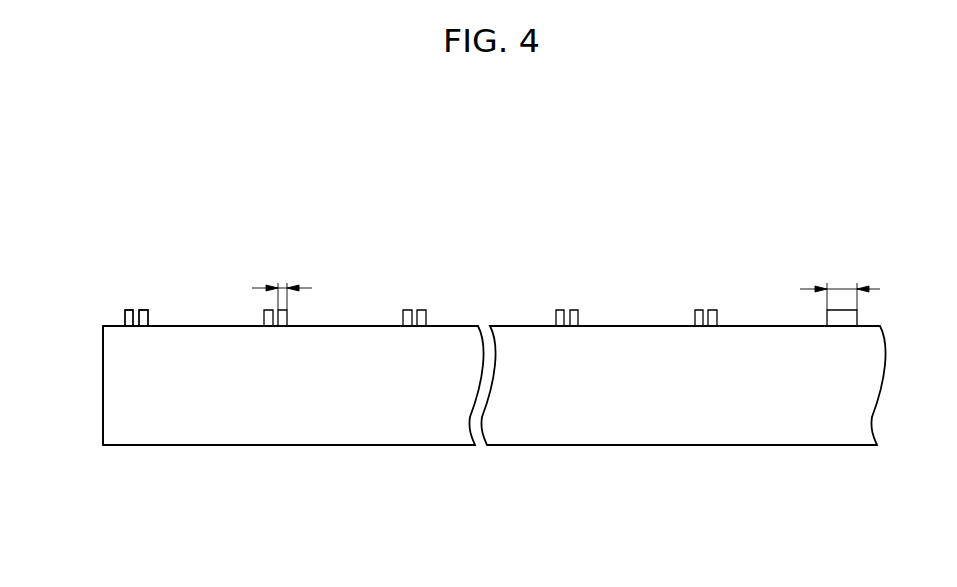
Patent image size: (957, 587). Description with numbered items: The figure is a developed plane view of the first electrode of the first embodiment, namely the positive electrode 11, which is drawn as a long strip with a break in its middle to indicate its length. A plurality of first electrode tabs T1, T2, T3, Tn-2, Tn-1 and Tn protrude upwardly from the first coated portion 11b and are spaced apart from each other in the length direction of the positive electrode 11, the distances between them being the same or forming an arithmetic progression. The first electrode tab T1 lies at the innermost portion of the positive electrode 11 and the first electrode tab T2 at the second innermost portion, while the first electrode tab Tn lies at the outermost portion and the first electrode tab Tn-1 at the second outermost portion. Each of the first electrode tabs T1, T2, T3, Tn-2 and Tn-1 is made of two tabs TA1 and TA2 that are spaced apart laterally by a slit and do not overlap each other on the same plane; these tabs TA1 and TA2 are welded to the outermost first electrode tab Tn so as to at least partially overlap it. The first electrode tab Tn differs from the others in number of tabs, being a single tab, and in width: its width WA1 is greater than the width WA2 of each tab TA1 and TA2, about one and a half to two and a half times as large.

The positive electrode 11 is at (419, 463).
The first coated portion 11b is at (113, 407).
The first electrode tab T1 is at (116, 312).
The first electrode tab T2 is at (293, 313).
The first electrode tab T3 is at (408, 305).
The first electrode tab Tn-2 is at (565, 305).
The first electrode tab Tn-1 is at (704, 306).
The first electrode tab Tn is at (862, 313).
The tab TA1 is at (143, 310).
The tab TA2 is at (125, 310).
The width WA1 is at (840, 282).
The width WA2 is at (282, 283).